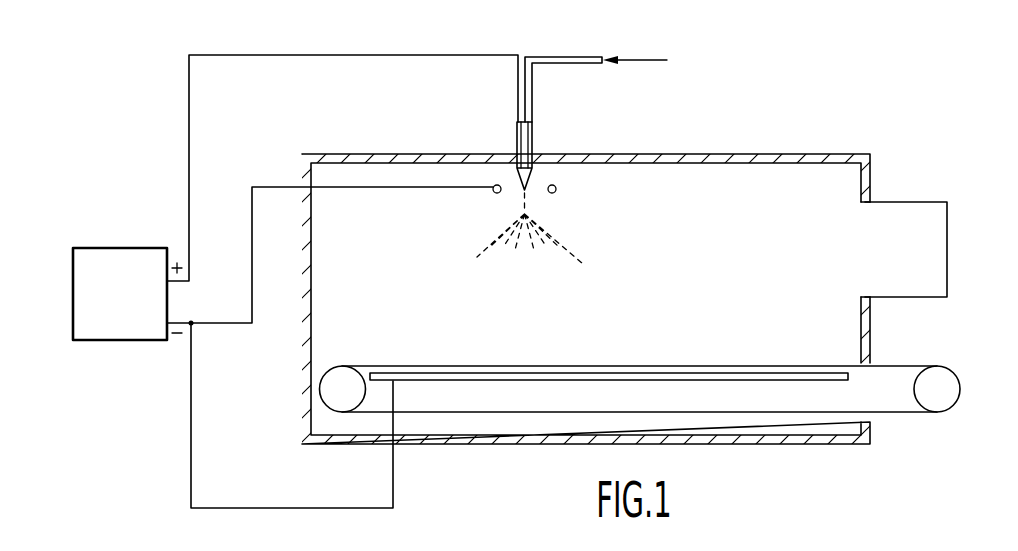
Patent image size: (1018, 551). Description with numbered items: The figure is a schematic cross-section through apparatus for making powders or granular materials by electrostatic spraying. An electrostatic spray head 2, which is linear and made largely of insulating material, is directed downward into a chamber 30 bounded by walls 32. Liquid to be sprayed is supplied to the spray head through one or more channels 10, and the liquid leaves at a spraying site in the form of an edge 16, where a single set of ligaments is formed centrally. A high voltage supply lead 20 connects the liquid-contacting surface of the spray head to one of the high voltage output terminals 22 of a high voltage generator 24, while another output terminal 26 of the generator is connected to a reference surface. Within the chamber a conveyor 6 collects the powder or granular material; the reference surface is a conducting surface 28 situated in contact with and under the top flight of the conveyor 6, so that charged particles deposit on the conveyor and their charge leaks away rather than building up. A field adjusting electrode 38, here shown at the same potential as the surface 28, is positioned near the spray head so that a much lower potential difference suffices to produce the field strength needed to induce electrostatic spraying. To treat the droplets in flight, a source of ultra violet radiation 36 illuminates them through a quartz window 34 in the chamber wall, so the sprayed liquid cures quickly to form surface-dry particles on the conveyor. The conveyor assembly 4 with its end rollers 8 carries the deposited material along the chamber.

The electrostatic spray head 2 is at (537, 146).
The conveyor 4 is at (654, 378).
The conveyor 6 is at (597, 365).
The belt rollers 8 is at (345, 376).
The channels 10 is at (583, 56).
The spraying edge 16 is at (530, 195).
The high voltage supply lead 20 is at (390, 54).
The high voltage output terminal 22 is at (175, 293).
The high voltage generator 24 is at (136, 337).
The output terminal 26 is at (180, 315).
The conducting surface 28 is at (834, 384).
The chamber 30 is at (698, 267).
The walls 32 is at (872, 176).
The quartz window 34 is at (862, 262).
The source of ultra violet radiation 36 is at (937, 265).
The field adjusting electrode 38 is at (492, 193).